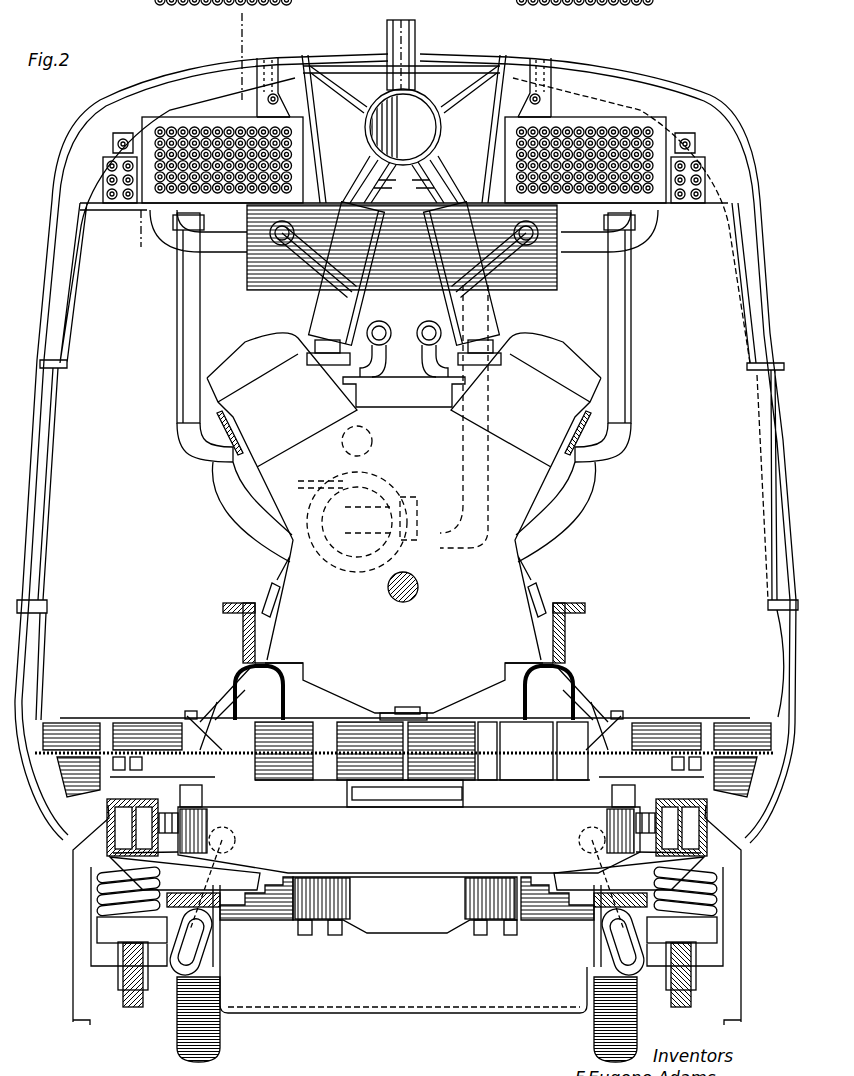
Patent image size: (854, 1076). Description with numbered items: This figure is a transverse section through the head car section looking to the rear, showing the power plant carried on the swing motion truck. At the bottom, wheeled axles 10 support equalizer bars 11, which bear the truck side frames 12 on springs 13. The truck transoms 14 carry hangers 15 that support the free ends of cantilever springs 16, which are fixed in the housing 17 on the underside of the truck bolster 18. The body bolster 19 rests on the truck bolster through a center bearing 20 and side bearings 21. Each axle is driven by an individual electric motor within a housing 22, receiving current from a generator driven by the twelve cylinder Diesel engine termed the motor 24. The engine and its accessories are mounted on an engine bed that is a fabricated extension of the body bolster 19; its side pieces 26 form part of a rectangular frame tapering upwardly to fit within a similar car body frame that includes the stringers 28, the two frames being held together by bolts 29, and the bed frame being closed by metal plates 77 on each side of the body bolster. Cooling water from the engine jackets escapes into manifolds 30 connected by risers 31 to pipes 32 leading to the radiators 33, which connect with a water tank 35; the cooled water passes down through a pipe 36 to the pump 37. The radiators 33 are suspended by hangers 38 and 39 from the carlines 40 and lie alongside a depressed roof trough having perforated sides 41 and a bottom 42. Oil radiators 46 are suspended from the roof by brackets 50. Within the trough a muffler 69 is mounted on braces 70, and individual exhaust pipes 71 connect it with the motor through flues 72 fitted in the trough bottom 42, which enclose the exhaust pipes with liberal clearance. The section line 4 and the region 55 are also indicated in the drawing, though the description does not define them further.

The section line 4- 4 is at (236, 20).
The wheeled axle 10 is at (185, 882).
The equalizer bar 11 is at (137, 1008).
The truck side frame 12 is at (134, 798).
The spring 13 is at (100, 893).
The truck transom 14 is at (247, 878).
The hanger 15 is at (210, 908).
The cantilever spring 16 is at (279, 912).
The housing 17 is at (377, 921).
The truck bolster 18 is at (409, 887).
The body bolster 19 is at (466, 770).
The center bearing 20 is at (360, 798).
The side bearing 21 is at (200, 800).
The motor housing 22 is at (388, 1008).
The motor 24 is at (275, 523).
The side piece 26 is at (193, 716).
The stringer 28 is at (150, 720).
The bolt 29 is at (123, 718).
The manifold 30 is at (424, 323).
The riser 31 is at (310, 274).
The pipe 32 is at (276, 243).
The radiator 33 is at (190, 115).
The water tank 35 is at (268, 293).
The pipe 36 is at (463, 466).
The pump 37 is at (337, 568).
The hanger 38 is at (270, 86).
The hanger 39 is at (114, 142).
The carline 40 is at (150, 92).
The perforated side 41 is at (484, 75).
The bottom 42 is at (362, 198).
The oil radiator 46 is at (101, 178).
The bracket 50 is at (100, 207).
The engine compartment 55 is at (658, 534).
The muffler 69 is at (381, 99).
The brace 70 is at (448, 101).
The exhaust pipe 71 is at (420, 180).
The flue 72 is at (442, 270).
The metal plate 77 is at (281, 757).